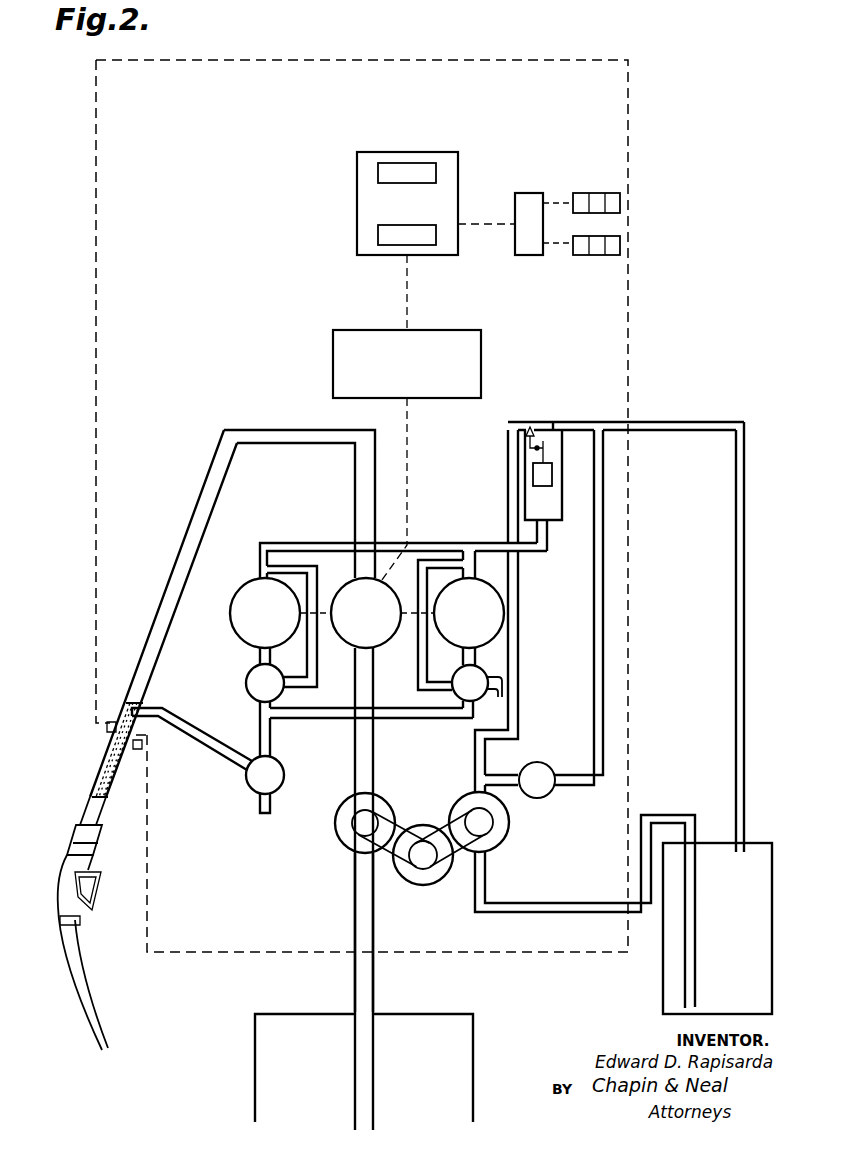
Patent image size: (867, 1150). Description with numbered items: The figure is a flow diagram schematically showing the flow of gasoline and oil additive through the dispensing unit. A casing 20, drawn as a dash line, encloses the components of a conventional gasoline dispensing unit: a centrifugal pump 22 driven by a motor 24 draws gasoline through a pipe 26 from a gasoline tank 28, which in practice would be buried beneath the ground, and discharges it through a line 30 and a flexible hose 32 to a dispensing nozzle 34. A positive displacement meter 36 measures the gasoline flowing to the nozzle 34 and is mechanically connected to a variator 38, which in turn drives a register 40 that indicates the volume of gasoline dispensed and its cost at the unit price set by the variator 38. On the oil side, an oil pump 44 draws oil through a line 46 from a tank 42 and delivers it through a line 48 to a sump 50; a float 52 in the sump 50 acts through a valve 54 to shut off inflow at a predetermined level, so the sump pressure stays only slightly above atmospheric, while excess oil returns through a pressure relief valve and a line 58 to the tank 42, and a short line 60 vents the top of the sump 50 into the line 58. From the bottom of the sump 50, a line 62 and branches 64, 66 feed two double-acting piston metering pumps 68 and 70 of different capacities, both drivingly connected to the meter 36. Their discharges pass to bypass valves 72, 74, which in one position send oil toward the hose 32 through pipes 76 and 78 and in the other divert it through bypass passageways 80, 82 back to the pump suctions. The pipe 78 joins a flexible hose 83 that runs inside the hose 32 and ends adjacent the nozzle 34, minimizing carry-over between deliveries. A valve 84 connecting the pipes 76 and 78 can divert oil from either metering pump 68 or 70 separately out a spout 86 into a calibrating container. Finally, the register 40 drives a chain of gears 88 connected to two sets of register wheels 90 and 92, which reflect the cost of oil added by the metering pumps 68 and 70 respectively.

The casing 20 is at (243, 60).
The centrifugal pump 22 is at (378, 812).
The motor 24 is at (418, 887).
The pipe 26 is at (352, 912).
The gasoline tank 28 is at (474, 1047).
The line 30 is at (253, 428).
The flexible hose 32 is at (118, 792).
The dispensing nozzle 34 is at (57, 913).
The positive displacement meter 36 is at (392, 596).
The variator 38 is at (481, 368).
The register 40 is at (357, 186).
The tank 42 is at (773, 898).
The oil pump 44 is at (500, 845).
The line 46 is at (556, 900).
The line 48 is at (519, 685).
The sump 50 is at (562, 500).
The float 52 is at (552, 470).
The valve 54 is at (530, 426).
The line 58 is at (736, 462).
The short line 60 is at (580, 422).
The line 62 is at (549, 552).
The branch 64 is at (258, 570).
The branch 66 is at (473, 568).
The metering pump 68 is at (232, 622).
The metering pump 70 is at (498, 596).
The bypass valve 72 is at (246, 683).
The bypass valve 74 is at (479, 687).
The pipe 76 is at (272, 742).
The pipe 78 is at (203, 740).
The bypass passageway 80 is at (318, 662).
The bypass passageway 82 is at (418, 673).
The flexible hose 83 is at (106, 775).
The valve 84 is at (250, 789).
The spout 86 is at (272, 805).
The chain of gears 88 is at (529, 193).
The register wheels 90 is at (622, 193).
The register wheels 92 is at (622, 248).